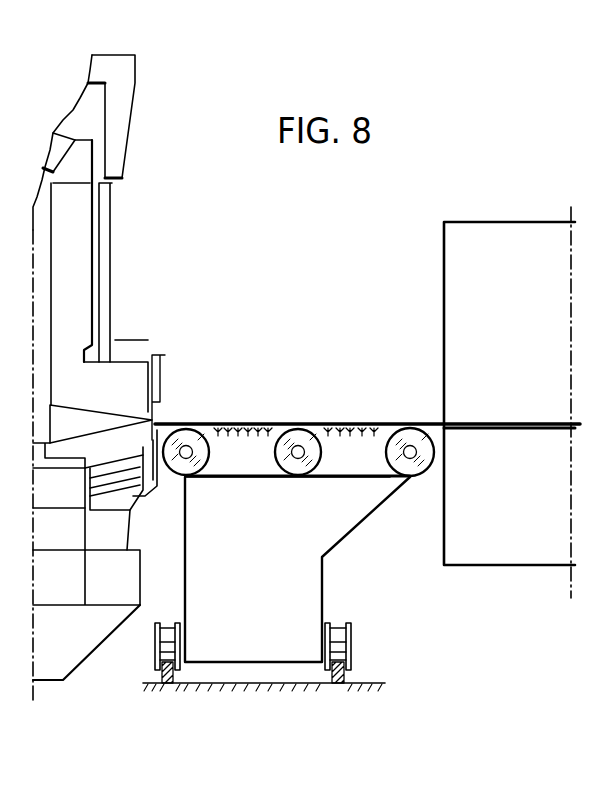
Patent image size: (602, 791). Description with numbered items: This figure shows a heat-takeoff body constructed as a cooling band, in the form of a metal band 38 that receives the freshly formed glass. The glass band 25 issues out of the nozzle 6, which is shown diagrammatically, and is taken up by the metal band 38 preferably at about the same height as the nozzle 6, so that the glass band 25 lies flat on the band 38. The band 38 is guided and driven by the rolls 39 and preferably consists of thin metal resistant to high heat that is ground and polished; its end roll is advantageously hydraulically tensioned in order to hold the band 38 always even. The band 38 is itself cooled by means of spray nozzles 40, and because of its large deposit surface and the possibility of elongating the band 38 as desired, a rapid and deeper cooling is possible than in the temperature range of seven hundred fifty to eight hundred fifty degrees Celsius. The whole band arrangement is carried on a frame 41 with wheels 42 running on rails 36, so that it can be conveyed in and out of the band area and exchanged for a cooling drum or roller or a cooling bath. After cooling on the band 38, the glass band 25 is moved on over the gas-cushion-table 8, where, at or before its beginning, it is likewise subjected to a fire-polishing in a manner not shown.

The nozzle 6 is at (150, 414).
The gas-cushion-table 8 is at (502, 554).
The glass band 25 is at (169, 424).
The rails 36 is at (168, 690).
The metal band 38 is at (347, 424).
The rolls 39 is at (408, 458).
The spray nozzles 40 is at (350, 440).
The frame 41 is at (310, 576).
The wheels 42 is at (351, 645).